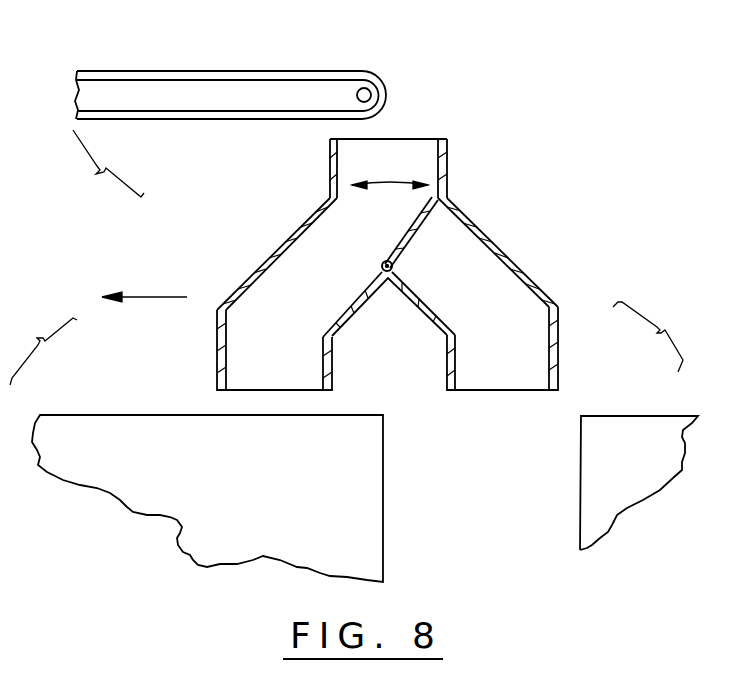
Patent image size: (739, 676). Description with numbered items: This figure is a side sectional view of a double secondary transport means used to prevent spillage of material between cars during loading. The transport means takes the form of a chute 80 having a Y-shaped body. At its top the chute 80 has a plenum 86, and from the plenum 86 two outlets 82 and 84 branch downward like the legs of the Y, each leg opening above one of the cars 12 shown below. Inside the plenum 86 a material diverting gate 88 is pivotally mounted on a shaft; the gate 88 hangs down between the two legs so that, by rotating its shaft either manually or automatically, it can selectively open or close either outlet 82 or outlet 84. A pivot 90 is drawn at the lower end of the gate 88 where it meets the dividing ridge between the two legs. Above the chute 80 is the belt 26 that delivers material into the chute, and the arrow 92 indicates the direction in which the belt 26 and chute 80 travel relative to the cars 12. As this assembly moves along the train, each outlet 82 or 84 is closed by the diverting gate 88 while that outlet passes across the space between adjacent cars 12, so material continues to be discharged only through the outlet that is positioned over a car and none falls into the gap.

The cars 12 is at (266, 485).
The belt 26 is at (152, 70).
The chute 80 is at (393, 253).
The outlet 82 is at (217, 348).
The outlet 84 is at (558, 350).
The plenum 86 is at (438, 152).
The material diverting gate 88 is at (412, 237).
The pivot 90 is at (382, 264).
The arrow 92 is at (157, 297).